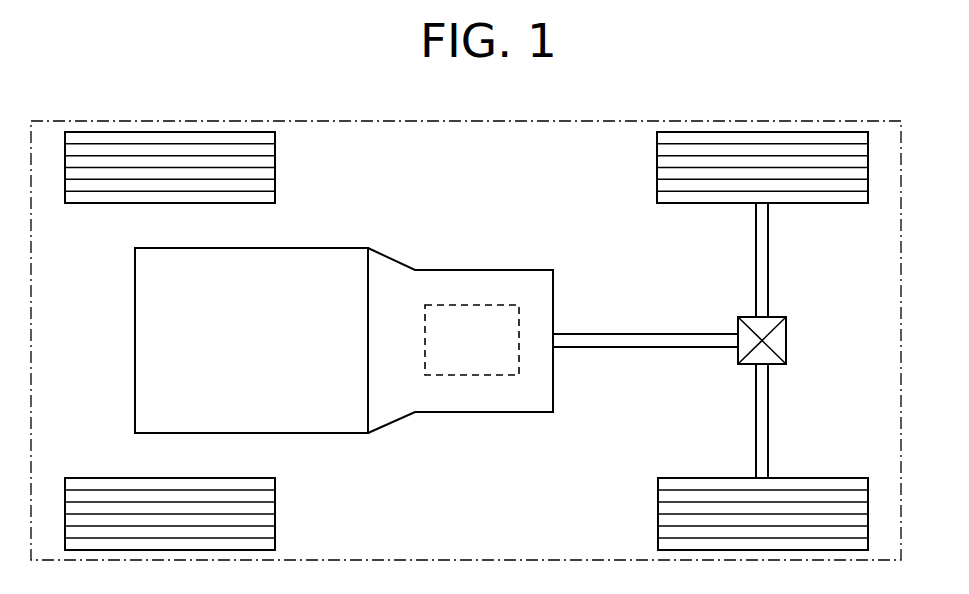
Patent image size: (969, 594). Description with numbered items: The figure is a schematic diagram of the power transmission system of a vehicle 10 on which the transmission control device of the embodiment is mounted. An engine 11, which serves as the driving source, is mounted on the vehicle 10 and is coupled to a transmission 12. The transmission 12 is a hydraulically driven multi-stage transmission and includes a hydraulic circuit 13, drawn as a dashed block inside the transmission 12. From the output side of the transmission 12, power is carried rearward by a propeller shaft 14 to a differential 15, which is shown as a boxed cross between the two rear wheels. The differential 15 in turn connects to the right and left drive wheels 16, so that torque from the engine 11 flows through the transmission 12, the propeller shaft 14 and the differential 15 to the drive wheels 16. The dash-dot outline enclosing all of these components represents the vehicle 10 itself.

The vehicle 10 is at (904, 190).
The engine 11 is at (134, 288).
The transmission 12 is at (482, 268).
The hydraulic circuit 13 is at (472, 378).
The propeller shaft 14 is at (645, 350).
The differential 15 is at (788, 343).
The drive wheels 16 is at (657, 168).